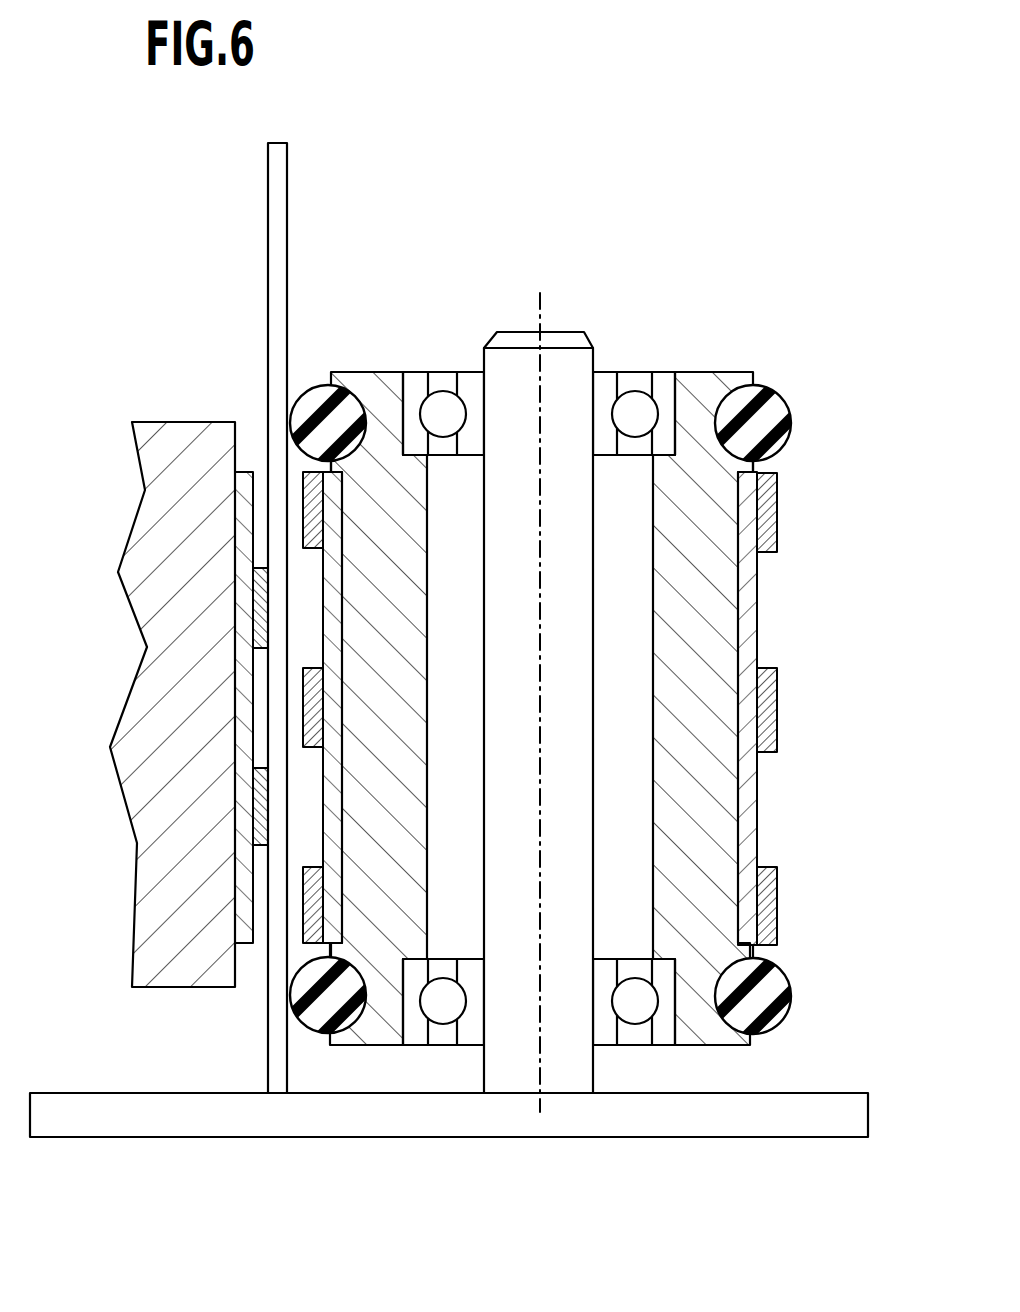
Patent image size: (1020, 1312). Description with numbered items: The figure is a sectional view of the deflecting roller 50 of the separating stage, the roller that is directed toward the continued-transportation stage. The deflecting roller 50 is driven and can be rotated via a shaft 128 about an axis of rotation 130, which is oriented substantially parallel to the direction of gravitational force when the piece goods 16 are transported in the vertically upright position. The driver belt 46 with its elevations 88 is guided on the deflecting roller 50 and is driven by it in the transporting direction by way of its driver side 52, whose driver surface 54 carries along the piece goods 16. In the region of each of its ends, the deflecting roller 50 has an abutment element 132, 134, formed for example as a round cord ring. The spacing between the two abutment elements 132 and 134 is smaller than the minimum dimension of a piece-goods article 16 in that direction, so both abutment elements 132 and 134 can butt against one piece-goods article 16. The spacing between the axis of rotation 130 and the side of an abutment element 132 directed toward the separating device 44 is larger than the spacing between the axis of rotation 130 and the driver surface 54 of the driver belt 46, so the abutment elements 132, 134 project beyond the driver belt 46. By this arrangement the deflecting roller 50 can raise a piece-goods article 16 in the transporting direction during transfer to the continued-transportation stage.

The piece goods 16 is at (279, 282).
The separating device 44 is at (161, 404).
The driver belt 46 is at (748, 638).
The deflecting roller 50 is at (681, 268).
The driver side 52 is at (303, 907).
The driver surface 54 is at (303, 707).
The elevations 88 is at (778, 513).
The shaft 128 is at (568, 1038).
The axis of rotation 130 is at (557, 380).
The abutment element 132 is at (772, 412).
The abutment element 134 is at (772, 982).